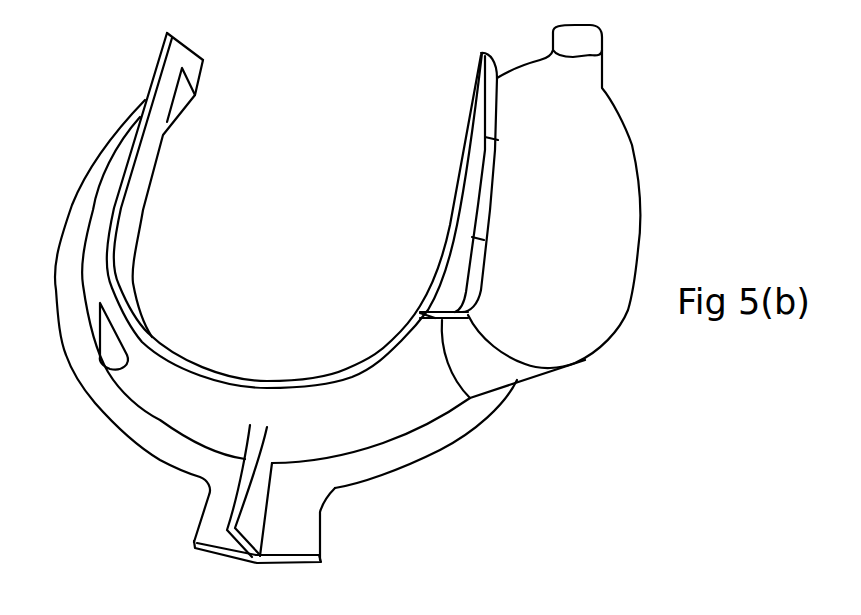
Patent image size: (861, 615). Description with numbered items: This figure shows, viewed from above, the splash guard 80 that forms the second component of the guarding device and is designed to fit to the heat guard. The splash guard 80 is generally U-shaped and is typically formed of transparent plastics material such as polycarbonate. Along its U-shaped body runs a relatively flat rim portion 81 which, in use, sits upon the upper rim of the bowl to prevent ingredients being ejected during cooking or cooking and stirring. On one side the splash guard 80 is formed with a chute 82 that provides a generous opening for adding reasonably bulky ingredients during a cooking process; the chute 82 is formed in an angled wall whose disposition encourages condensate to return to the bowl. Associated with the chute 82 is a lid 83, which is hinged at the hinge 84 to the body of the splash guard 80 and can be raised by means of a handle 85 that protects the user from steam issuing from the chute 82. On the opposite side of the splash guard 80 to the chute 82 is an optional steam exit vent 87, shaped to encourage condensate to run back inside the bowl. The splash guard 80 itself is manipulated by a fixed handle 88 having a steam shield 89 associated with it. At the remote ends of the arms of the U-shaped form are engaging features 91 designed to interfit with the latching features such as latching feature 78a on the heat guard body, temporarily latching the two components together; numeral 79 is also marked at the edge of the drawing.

The splash guard 80 is at (124, 522).
The rim portion 81 is at (95, 178).
The chute 82 is at (508, 373).
The lid 83 is at (600, 170).
The hinge 84 is at (487, 165).
The handle 85 is at (580, 43).
The steam exit vent 87 is at (117, 353).
The fixed handle 88 is at (253, 505).
The steam shield 89 is at (294, 538).
The engaging features 91 is at (195, 68).
The latching feature 78a is at (393, 613).
The element 79 is at (543, 611).